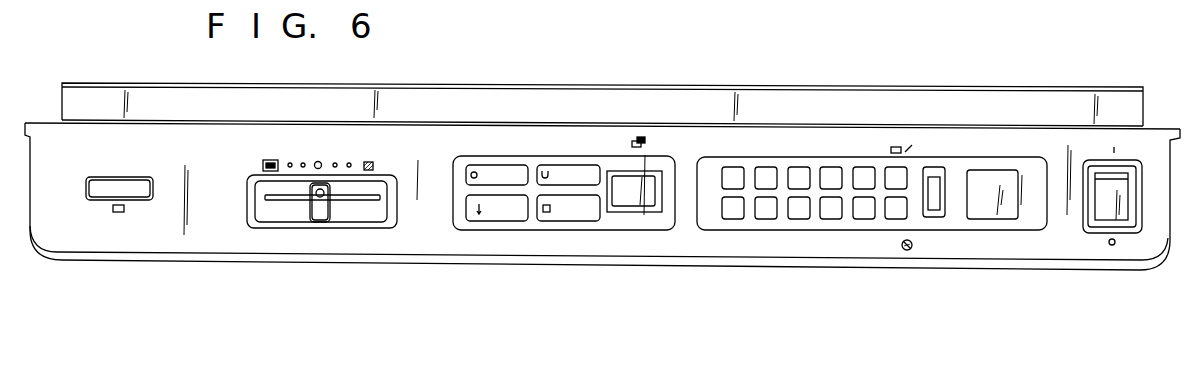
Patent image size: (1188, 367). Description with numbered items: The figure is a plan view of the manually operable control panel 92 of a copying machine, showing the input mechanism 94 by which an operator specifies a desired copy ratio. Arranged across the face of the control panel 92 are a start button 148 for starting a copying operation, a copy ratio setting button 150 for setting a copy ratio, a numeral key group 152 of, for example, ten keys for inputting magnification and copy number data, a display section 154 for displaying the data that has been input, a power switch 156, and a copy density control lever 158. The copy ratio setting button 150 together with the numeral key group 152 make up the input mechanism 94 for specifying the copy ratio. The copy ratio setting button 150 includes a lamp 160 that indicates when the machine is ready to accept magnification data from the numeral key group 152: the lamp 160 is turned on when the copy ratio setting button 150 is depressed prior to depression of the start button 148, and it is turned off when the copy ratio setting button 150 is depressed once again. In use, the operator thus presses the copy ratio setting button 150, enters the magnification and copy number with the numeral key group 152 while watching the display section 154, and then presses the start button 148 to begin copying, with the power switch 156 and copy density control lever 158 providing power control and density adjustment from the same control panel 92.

The control panel 92 is at (211, 241).
The input mechanism 94 is at (728, 237).
The start button 148 is at (998, 182).
The copy ratio setting button 150 is at (935, 172).
The numeral key group 152 is at (780, 215).
The display section 154 is at (668, 160).
The power switch 156 is at (1104, 199).
The copy density control lever 158 is at (320, 214).
The lamp 160 is at (937, 216).